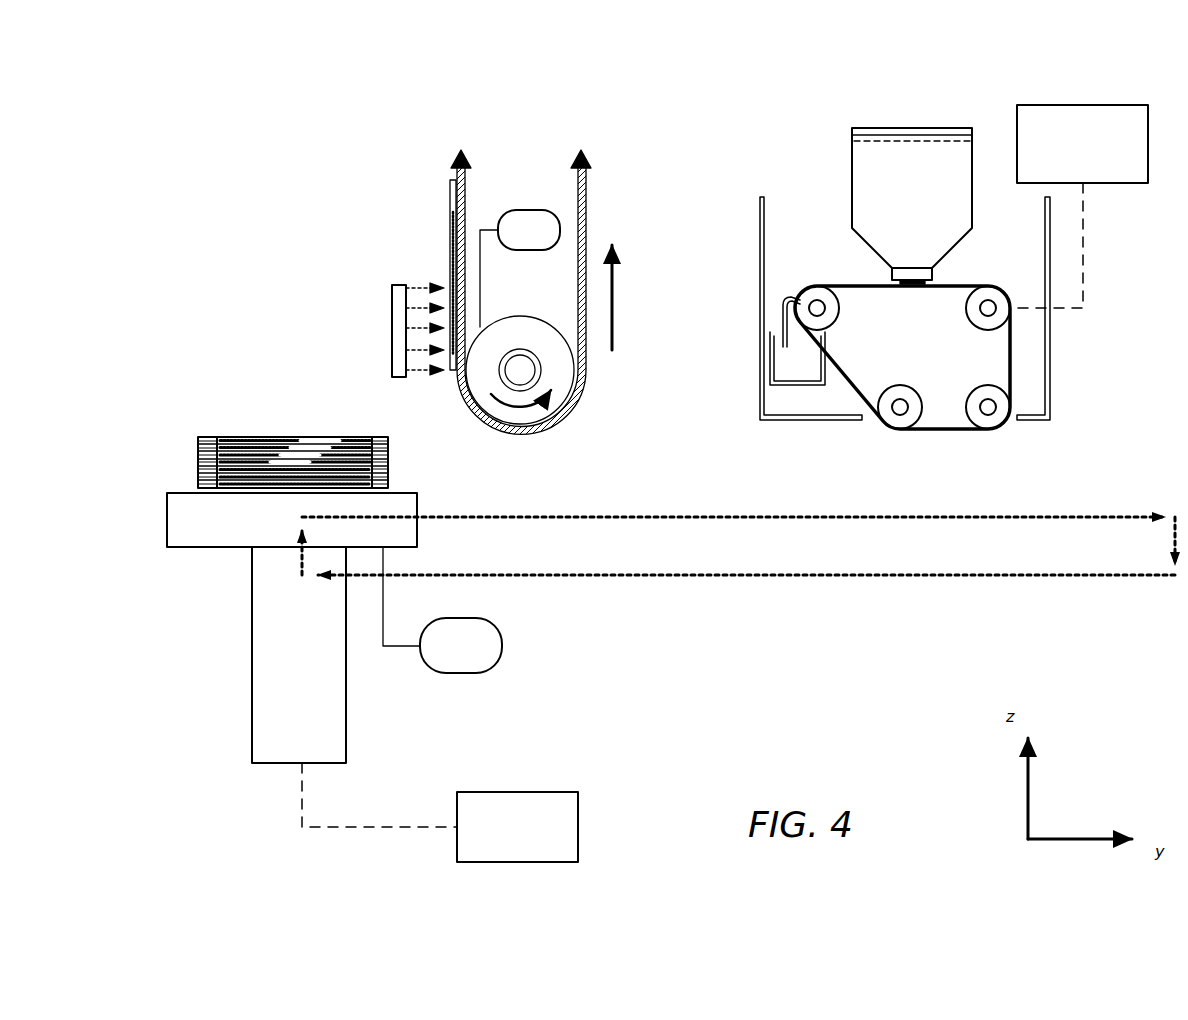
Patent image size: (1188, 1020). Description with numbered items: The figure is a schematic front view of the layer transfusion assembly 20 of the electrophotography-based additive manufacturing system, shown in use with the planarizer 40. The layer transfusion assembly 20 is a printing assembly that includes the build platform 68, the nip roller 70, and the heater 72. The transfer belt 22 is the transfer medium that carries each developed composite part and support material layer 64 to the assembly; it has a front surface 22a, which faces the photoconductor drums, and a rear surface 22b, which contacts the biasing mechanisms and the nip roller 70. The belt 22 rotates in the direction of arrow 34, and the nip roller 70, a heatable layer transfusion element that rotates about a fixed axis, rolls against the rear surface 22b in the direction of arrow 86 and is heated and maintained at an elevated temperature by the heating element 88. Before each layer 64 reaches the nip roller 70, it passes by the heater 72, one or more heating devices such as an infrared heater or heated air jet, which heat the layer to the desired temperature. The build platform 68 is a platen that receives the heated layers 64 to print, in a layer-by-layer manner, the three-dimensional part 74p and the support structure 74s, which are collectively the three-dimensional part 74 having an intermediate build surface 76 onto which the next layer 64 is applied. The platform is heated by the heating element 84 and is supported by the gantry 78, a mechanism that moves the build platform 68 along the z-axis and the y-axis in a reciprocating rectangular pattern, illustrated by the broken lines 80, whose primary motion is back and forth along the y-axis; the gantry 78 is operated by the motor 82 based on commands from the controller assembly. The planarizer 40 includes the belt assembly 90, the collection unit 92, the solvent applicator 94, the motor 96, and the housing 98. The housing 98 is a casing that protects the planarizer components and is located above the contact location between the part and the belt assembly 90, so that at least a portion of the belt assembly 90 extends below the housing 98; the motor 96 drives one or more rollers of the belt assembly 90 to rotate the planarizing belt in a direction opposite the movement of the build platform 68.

The layer transfusion assembly 20 is at (1100, 668).
The transfer belt 22 is at (438, 172).
The front surface 22a is at (586, 200).
The rear surface 22b is at (466, 180).
The arrow 34 is at (614, 272).
The planarizer 40 is at (914, 296).
The combined part and support material layer 64 is at (438, 243).
The build platform 68 is at (167, 522).
The nip roller 70 is at (488, 410).
The heater 72 is at (380, 291).
The 3D part 74 is at (252, 426).
The 3D part 74p is at (235, 448).
The support structure 74s is at (200, 463).
The intermediate build surface 76 is at (351, 437).
The gantry 78 is at (346, 702).
The broken lines 80 is at (766, 580).
The motor 82 is at (578, 817).
The heating element 84 is at (502, 635).
The arrow 86 is at (521, 404).
The heating element 88 is at (516, 210).
The belt assembly 90 is at (960, 440).
The collection unit 92 is at (766, 358).
The solvent applicator 94 is at (846, 160).
The motor 96 is at (1120, 183).
The housing 98 is at (760, 273).